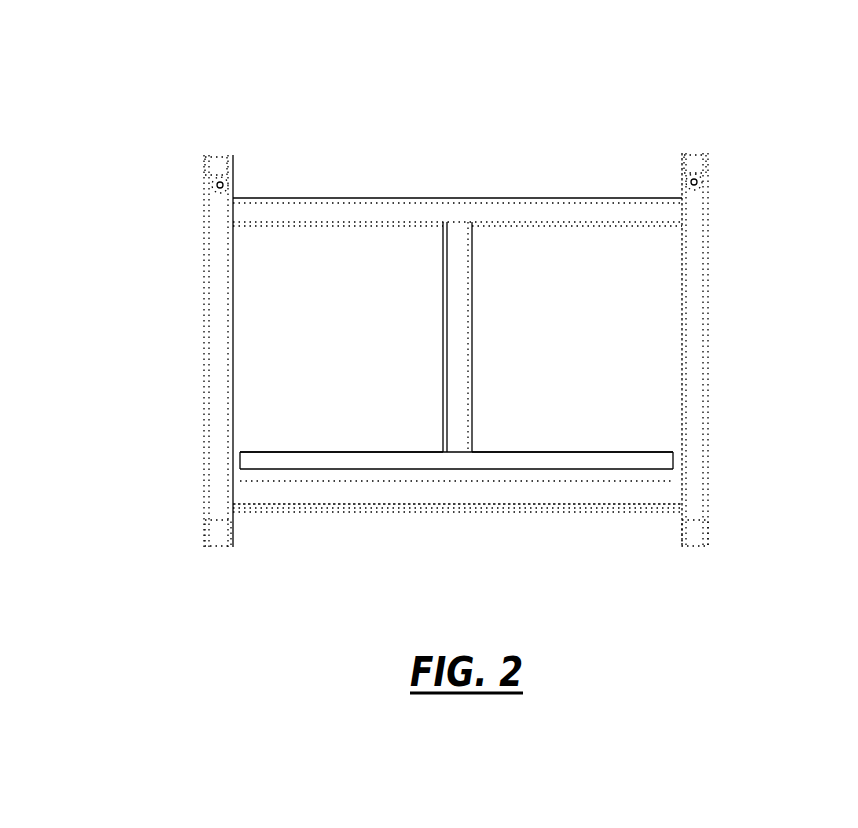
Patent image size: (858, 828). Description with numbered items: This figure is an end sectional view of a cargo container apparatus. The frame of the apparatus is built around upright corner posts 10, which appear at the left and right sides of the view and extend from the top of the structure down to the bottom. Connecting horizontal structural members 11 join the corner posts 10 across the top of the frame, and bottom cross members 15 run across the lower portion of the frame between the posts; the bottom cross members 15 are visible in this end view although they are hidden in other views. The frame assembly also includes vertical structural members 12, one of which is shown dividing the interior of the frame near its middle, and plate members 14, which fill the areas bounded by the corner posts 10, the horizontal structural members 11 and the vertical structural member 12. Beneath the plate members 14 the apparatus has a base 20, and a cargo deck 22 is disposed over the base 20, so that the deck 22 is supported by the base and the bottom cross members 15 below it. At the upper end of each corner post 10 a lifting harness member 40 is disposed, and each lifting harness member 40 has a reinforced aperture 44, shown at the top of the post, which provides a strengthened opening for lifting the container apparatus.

The upright corner post 10 is at (215, 342).
The connecting horizontal structural member 11 is at (345, 217).
The vertical structural member 12 is at (463, 353).
The plate member 14 is at (380, 290).
The bottom cross member 15 is at (585, 493).
The base 20 is at (262, 507).
The cargo deck 22 is at (350, 449).
The lifting harness member 40 is at (203, 193).
The reinforced aperture 44 is at (233, 178).